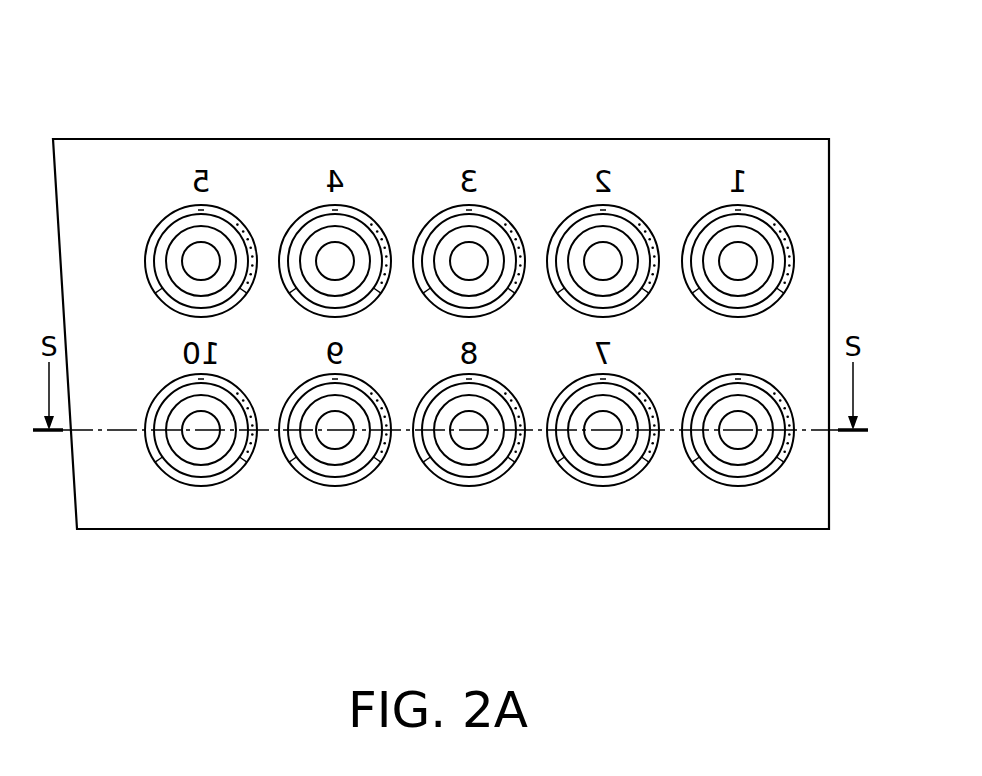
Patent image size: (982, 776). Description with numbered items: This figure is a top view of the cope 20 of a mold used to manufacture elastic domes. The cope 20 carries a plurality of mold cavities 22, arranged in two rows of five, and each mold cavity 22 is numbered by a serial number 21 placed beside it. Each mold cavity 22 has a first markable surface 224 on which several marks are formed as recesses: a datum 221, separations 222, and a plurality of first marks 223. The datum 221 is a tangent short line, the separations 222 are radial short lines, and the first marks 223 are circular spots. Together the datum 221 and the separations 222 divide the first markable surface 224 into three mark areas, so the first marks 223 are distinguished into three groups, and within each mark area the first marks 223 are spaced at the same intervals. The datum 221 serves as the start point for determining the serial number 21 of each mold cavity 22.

The cope 20 is at (194, 128).
The serial number 21 is at (750, 353).
The mold cavity 22 is at (451, 178).
The datum 221 is at (466, 205).
The separations 222 is at (520, 290).
The first marks 223 is at (525, 275).
The first markable surface 224 is at (420, 237).